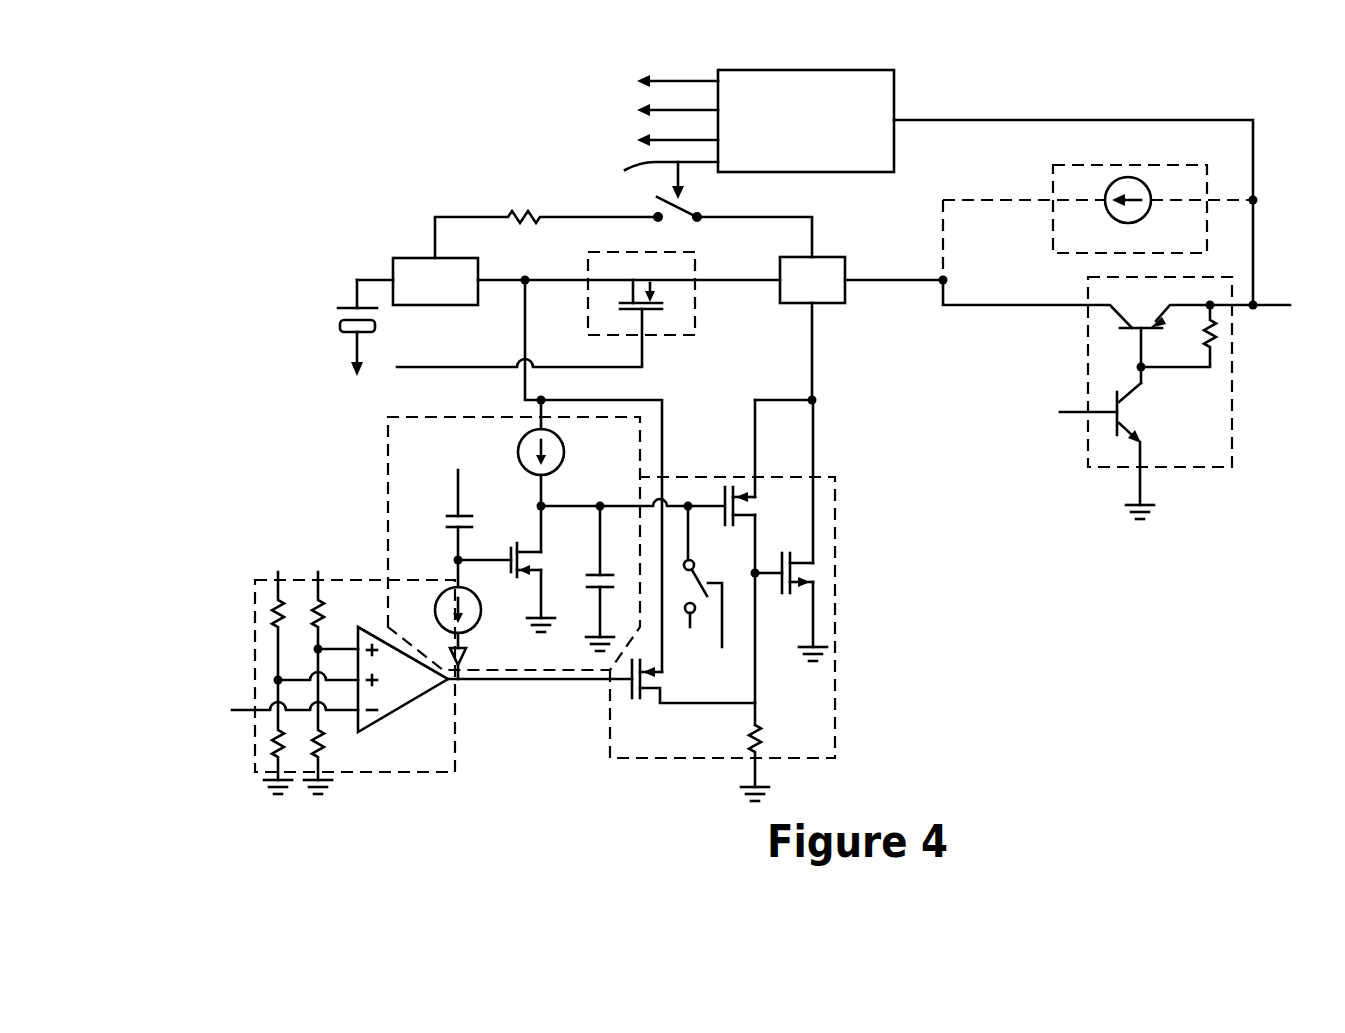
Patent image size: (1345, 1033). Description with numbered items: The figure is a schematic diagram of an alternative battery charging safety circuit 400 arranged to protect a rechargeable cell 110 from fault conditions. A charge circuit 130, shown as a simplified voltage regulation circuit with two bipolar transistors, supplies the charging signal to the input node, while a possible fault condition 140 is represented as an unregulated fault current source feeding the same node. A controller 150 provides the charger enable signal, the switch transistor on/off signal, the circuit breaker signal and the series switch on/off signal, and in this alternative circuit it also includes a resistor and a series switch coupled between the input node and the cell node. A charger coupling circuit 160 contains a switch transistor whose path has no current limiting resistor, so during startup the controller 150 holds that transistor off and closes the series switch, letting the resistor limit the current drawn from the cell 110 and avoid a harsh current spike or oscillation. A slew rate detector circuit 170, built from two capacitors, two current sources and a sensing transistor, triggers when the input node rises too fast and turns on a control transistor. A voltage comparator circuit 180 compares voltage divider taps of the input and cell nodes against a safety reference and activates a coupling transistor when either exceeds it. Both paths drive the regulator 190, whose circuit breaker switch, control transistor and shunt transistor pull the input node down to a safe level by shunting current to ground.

The battery charging safety circuit 400 is at (239, 91).
The cell 110 is at (377, 327).
The charge circuit 130 is at (1232, 441).
The fault condition 140 is at (1152, 164).
The controller 150 is at (897, 84).
The charger coupling circuit 160 is at (695, 300).
The slew rate detector circuit 170 is at (388, 462).
The voltage comparator circuit 180 is at (455, 746).
The regulator 190 is at (835, 666).